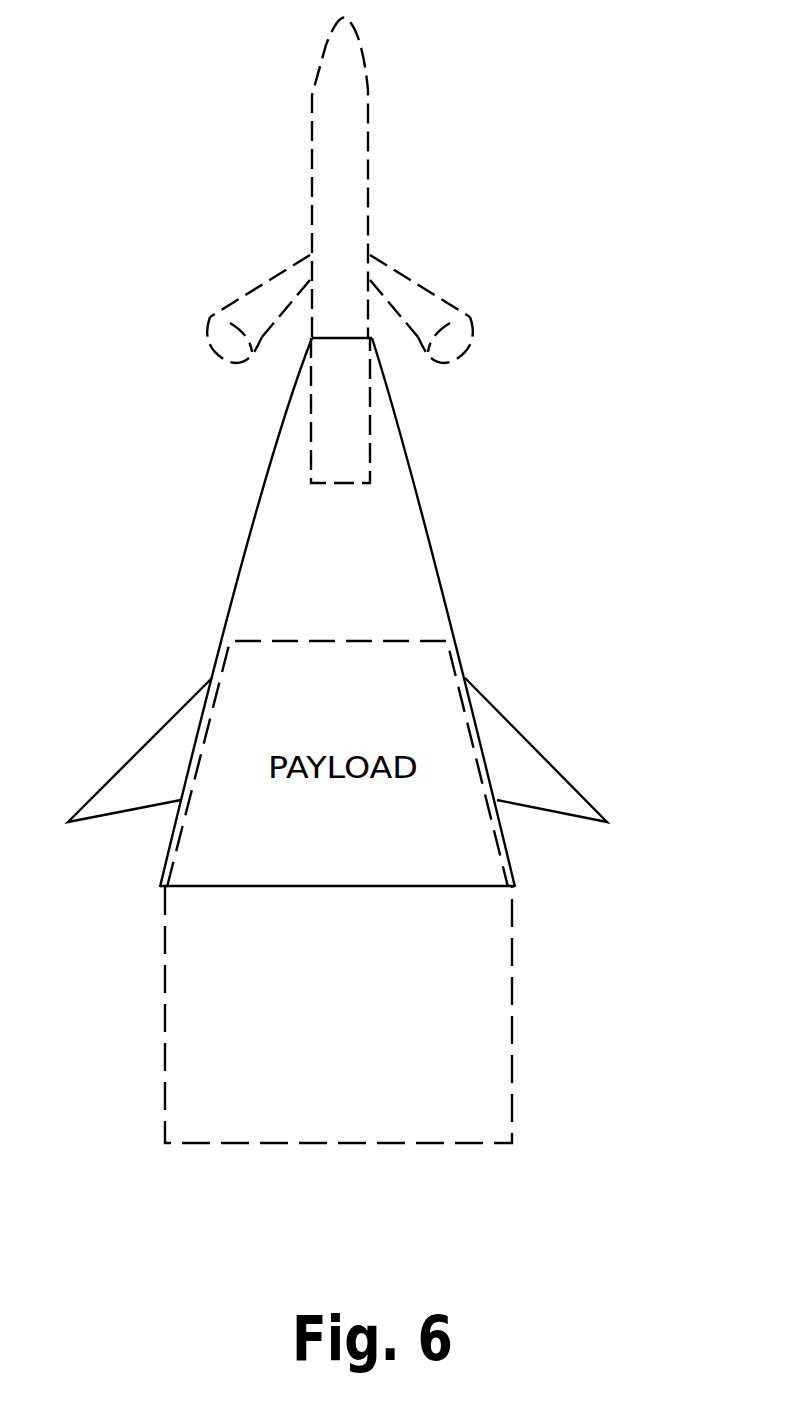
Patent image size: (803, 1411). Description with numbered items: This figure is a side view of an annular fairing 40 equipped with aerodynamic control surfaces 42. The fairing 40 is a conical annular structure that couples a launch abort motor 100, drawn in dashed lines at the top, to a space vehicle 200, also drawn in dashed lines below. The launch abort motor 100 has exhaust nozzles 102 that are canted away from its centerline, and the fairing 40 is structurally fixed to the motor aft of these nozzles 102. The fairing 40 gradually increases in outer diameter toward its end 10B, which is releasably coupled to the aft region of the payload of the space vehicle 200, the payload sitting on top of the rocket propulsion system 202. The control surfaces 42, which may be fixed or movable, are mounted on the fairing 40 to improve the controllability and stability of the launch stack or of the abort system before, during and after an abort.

The launch abort motor 100 is at (370, 108).
The exhaust nozzles 102 is at (253, 287).
The annular fairing 40 is at (440, 577).
The control surfaces 42 is at (152, 763).
The fairing end 10B is at (515, 887).
The space vehicle 200 is at (528, 997).
The rocket propulsion system 202 is at (450, 1053).